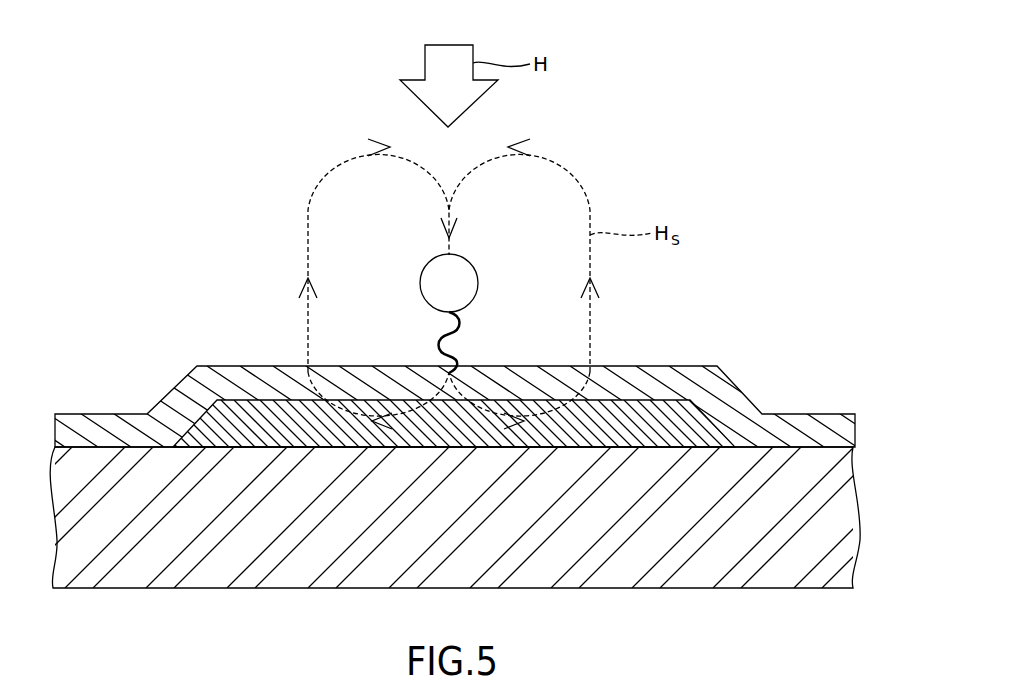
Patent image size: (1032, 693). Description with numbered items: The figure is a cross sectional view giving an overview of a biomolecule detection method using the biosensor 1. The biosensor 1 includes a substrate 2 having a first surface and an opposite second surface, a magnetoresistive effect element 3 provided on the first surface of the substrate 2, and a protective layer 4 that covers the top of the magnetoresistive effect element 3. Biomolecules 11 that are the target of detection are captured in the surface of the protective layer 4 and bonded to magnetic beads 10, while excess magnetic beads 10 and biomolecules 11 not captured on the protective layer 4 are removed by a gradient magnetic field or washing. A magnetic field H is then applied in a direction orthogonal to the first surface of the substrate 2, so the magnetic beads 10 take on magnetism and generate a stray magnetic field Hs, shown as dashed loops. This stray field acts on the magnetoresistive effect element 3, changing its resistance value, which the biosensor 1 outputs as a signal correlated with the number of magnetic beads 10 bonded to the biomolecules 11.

The biosensor 1 is at (722, 292).
The substrate 2 is at (825, 521).
The magnetoresistive effect element 3 is at (614, 417).
The protective layer 4 is at (268, 373).
The magnetic beads 10 is at (458, 257).
The biomolecules 11 is at (440, 352).